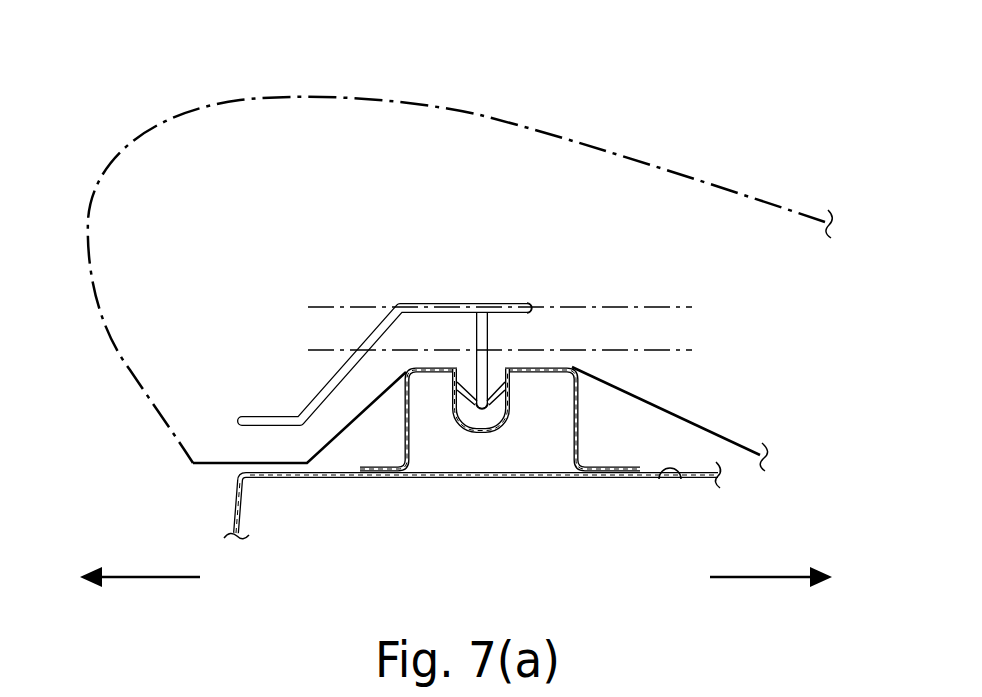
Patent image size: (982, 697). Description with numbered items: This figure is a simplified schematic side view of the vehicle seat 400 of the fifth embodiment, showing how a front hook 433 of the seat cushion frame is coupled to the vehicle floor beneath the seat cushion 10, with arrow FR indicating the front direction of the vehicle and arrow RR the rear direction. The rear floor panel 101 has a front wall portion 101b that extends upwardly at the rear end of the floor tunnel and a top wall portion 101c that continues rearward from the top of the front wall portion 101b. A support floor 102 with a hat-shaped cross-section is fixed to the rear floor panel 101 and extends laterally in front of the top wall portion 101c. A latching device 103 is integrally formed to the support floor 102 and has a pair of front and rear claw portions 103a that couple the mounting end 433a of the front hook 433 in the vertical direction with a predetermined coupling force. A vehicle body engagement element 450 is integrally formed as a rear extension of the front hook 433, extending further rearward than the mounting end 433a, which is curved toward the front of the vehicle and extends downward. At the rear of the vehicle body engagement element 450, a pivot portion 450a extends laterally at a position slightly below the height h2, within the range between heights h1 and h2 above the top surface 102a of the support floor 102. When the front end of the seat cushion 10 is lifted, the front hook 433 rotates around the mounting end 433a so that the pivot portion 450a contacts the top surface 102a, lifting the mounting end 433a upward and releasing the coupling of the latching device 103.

The seat cushion 10 is at (482, 116).
The vehicle seat 400 is at (666, 151).
The front hook 433 is at (333, 375).
The mounting end 433a is at (483, 410).
The vehicle body engagement element 450 is at (515, 300).
The pivot portion 450a is at (532, 302).
The height h1 is at (684, 352).
The height h2 is at (660, 297).
The rear floor panel 101 is at (696, 468).
The front wall portion 101b is at (233, 507).
The top wall portion 101c is at (680, 480).
The support floor 102 is at (400, 437).
The top surface 102a is at (573, 366).
The latching device 103 is at (501, 436).
The claw portions 103a is at (509, 402).
The front direction FR is at (130, 575).
The rear direction RR is at (782, 577).